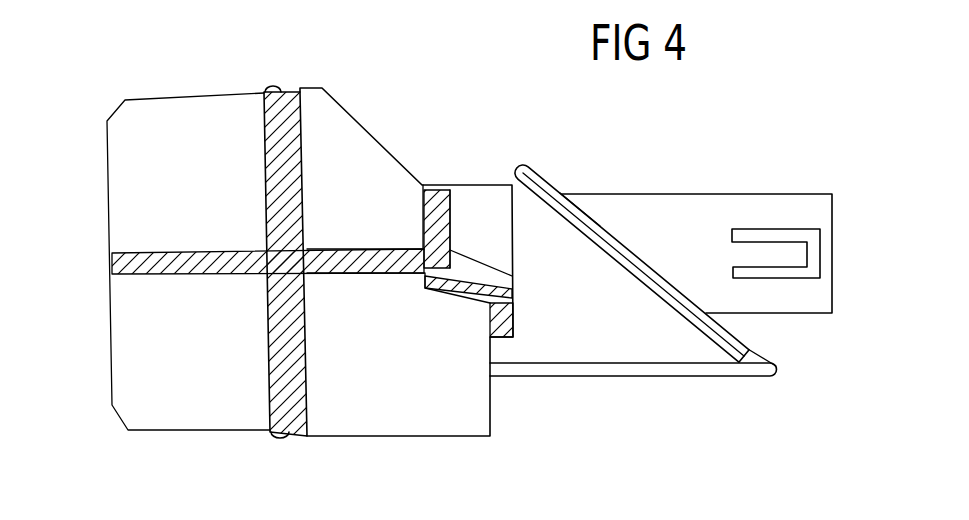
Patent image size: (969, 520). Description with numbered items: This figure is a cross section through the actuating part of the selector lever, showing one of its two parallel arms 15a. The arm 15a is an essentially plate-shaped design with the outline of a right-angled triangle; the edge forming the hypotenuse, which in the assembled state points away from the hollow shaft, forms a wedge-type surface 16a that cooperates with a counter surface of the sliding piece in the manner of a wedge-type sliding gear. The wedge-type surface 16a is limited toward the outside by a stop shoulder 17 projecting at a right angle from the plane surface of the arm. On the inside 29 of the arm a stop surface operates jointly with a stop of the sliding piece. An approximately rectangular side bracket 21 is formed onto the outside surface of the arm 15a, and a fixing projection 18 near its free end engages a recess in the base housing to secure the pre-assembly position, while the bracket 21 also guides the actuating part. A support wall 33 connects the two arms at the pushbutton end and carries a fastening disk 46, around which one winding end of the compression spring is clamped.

The arm 15a is at (628, 337).
The wedge-type surface 16a is at (593, 215).
The stop shoulder 17 is at (547, 180).
The fixing projection 18 is at (797, 256).
The side bracket 21 is at (673, 207).
The inside of arm 29 is at (677, 345).
The support wall 33 is at (423, 220).
The fastening disk 46 is at (450, 212).